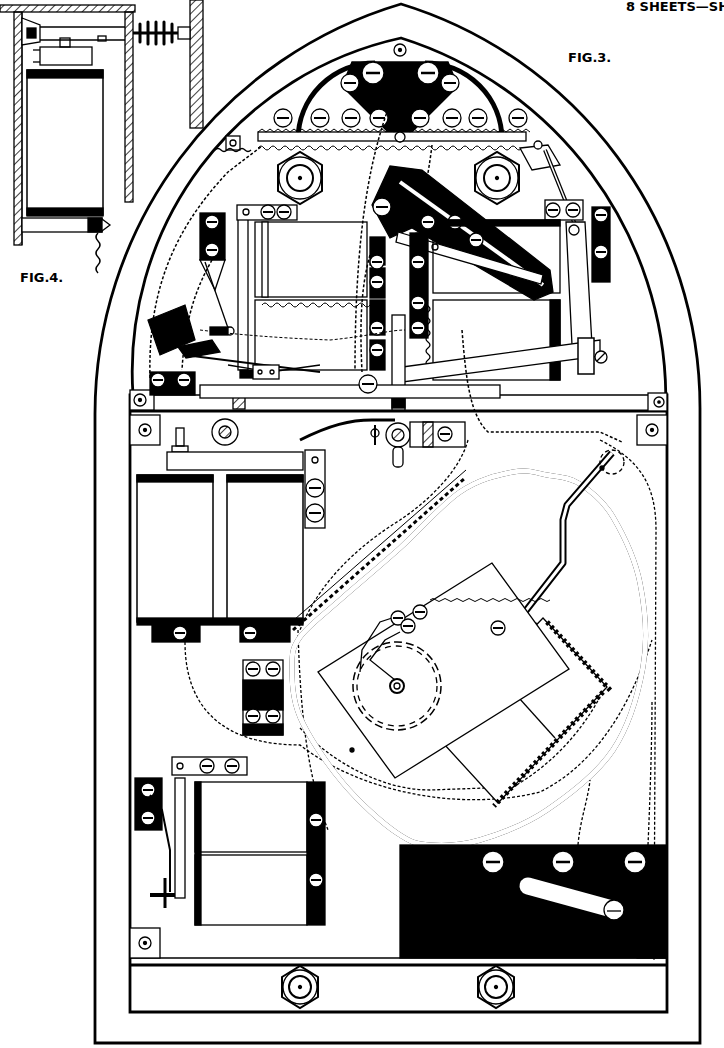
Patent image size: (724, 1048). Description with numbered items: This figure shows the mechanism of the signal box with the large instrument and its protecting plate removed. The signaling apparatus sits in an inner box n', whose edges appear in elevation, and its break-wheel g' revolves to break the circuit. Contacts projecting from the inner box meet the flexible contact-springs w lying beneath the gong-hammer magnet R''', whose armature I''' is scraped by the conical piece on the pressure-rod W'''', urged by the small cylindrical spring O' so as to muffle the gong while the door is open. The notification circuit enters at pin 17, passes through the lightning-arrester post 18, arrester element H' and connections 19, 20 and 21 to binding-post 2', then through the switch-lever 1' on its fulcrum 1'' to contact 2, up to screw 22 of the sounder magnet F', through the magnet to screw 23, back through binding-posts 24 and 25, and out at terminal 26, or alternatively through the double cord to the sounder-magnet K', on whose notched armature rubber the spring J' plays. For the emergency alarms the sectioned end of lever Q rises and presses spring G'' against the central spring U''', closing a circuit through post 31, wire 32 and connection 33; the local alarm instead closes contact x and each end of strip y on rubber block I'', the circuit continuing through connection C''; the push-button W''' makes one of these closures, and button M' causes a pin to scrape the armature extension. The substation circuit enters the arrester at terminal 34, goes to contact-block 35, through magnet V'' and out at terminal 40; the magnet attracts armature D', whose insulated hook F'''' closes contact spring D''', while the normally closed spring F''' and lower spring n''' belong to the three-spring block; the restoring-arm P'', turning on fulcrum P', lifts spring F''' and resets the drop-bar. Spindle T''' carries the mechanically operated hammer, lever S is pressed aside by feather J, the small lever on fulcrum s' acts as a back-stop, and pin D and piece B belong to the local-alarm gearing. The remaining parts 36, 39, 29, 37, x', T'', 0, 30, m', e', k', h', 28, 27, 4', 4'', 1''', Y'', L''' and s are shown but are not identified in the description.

In FIG. 4, the gong-hammer magnet R''' is at (65, 143).
In FIG. 3, the gong-hammer magnet R''' is at (220, 558).
In FIG. 4, the armature I''' is at (62, 51).
In FIG. 3, the armature I''' is at (246, 489).
In FIG. 4, the push-button W''' is at (35, 31).
In FIG. 4, the pressure-rod W'''' is at (82, 31).
In FIG. 3, the pressure-rod W'''' is at (242, 432).
In FIG. 4, the cylindrical spring O' is at (168, 64).
In FIG. 4, the lightning-arrester connection 19 is at (108, 253).
In FIG. 3, the lightning-arrester connection 19 is at (512, 113).
In FIG. 3, the outgoing terminal 26 is at (372, 58).
In FIG. 3, the entering pin 17 is at (430, 60).
In FIG. 3, the lightning-arrester element H' is at (400, 102).
In FIG. 3, the binding-post 25 is at (340, 82).
In FIG. 3, the lightning-arrester post 18 is at (460, 81).
In FIG. 3, the circuit connection 33 is at (292, 108).
In FIG. 3, the binding-post 24 is at (326, 112).
In FIG. 3, the substation arrester terminal 34 is at (371, 120).
In FIG. 3, the magnet screw 23 is at (436, 112).
In FIG. 3, the post 31 is at (486, 112).
In FIG. 3, the terminal 36 is at (233, 146).
In FIG. 3, the wire 32 is at (202, 262).
In FIG. 3, the contact-block 35 is at (385, 230).
In FIG. 3, the circuit connection C'' is at (462, 225).
In FIG. 3, the contact x is at (516, 295).
In FIG. 3, the contact strip y is at (508, 275).
In FIG. 3, the link arm L''' is at (549, 186).
In FIG. 3, the slide bar s is at (588, 276).
In FIG. 3, the rubber block I'' is at (496, 256).
In FIG. 3, the sounder magnet F' is at (496, 340).
In FIG. 3, the circuit connection 20 is at (446, 233).
In FIG. 3, the magnet screw 22 is at (435, 333).
In FIG. 3, the restoring-arm P'' is at (497, 360).
In FIG. 3, the insulated hook F'''' is at (611, 350).
In FIG. 3, the lever S is at (398, 362).
In FIG. 3, the substation magnet V'' is at (311, 259).
In FIG. 3, the coil box 39 is at (312, 335).
In FIG. 3, the substation terminal 40 is at (368, 295).
In FIG. 3, the wire 29 is at (356, 313).
In FIG. 3, the armature D' is at (267, 287).
In FIG. 3, the contact spring D''' is at (218, 254).
In FIG. 3, the pin D is at (205, 315).
In FIG. 3, the piece B is at (171, 323).
In FIG. 3, the spring F''' is at (198, 625).
In FIG. 3, the spring G'' is at (249, 357).
In FIG. 3, the central spring U''' is at (274, 363).
In FIG. 3, the lower spring n''' is at (183, 383).
In FIG. 3, the lever Q is at (231, 403).
In FIG. 3, the fulcrum P' is at (350, 391).
In FIG. 3, the corner screw 37 is at (152, 400).
In FIG. 3, the binding post x' is at (184, 439).
In FIG. 3, the knob T'' is at (385, 445).
In FIG. 3, the spindle T''' is at (377, 475).
In FIG. 3, the block 0 is at (437, 444).
In FIG. 3, the circuit connection 21 is at (542, 386).
In FIG. 3, the inner box n' is at (469, 658).
In FIG. 3, the wire 30 is at (376, 550).
In FIG. 3, the bar m' is at (522, 591).
In FIG. 3, the button M' is at (605, 457).
In FIG. 3, the plate e' is at (522, 712).
In FIG. 3, the break-wheel g' is at (443, 670).
In FIG. 3, the disc k' is at (397, 686).
In FIG. 3, the fulcrum s' is at (393, 642).
In FIG. 3, the contact h' is at (490, 617).
In FIG. 3, the wire 28 is at (361, 749).
In FIG. 3, the contact-spring w is at (252, 697).
In FIG. 3, the bracket 27 is at (223, 766).
In FIG. 3, the sounder-magnet K' is at (260, 853).
In FIG. 3, the spring J' is at (180, 838).
In FIG. 3, the feather J is at (152, 835).
In FIG. 3, the contact 2 is at (533, 901).
In FIG. 3, the screw 4' is at (499, 851).
In FIG. 3, the screw 4'' is at (571, 826).
In FIG. 3, the binding-post 2' is at (638, 786).
In FIG. 3, the switch-lever 1' is at (570, 897).
In FIG. 3, the fulcrum 1'' is at (614, 910).
In FIG. 3, the block 1''' is at (393, 903).
In FIG. 3, the knob Y'' is at (398, 987).